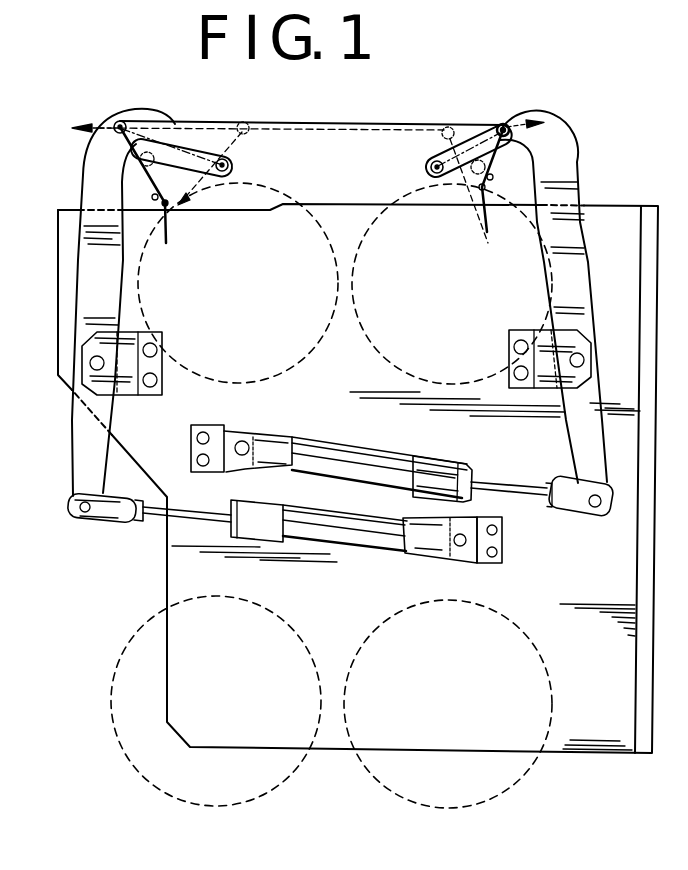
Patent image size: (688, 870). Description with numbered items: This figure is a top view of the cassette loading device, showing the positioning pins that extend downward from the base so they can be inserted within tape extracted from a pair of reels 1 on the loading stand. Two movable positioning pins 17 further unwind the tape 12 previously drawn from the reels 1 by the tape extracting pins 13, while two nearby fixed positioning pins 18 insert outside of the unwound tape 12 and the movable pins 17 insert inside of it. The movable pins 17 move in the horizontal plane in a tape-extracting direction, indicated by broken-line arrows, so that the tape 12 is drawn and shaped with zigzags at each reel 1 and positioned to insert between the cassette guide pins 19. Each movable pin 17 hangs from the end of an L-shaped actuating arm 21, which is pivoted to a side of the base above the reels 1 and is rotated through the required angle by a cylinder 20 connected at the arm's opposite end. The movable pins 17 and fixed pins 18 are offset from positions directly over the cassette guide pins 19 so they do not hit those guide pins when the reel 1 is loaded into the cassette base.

The reel 1 is at (294, 366).
The tape 12 is at (315, 128).
The tape extracting pin 13 is at (242, 124).
The movable positioning pin 17 is at (118, 118).
The fixed positioning pin 18 is at (160, 203).
The cassette guide pin 19 is at (148, 152).
The cylinder 20 is at (353, 450).
The actuating arm 21 is at (80, 330).